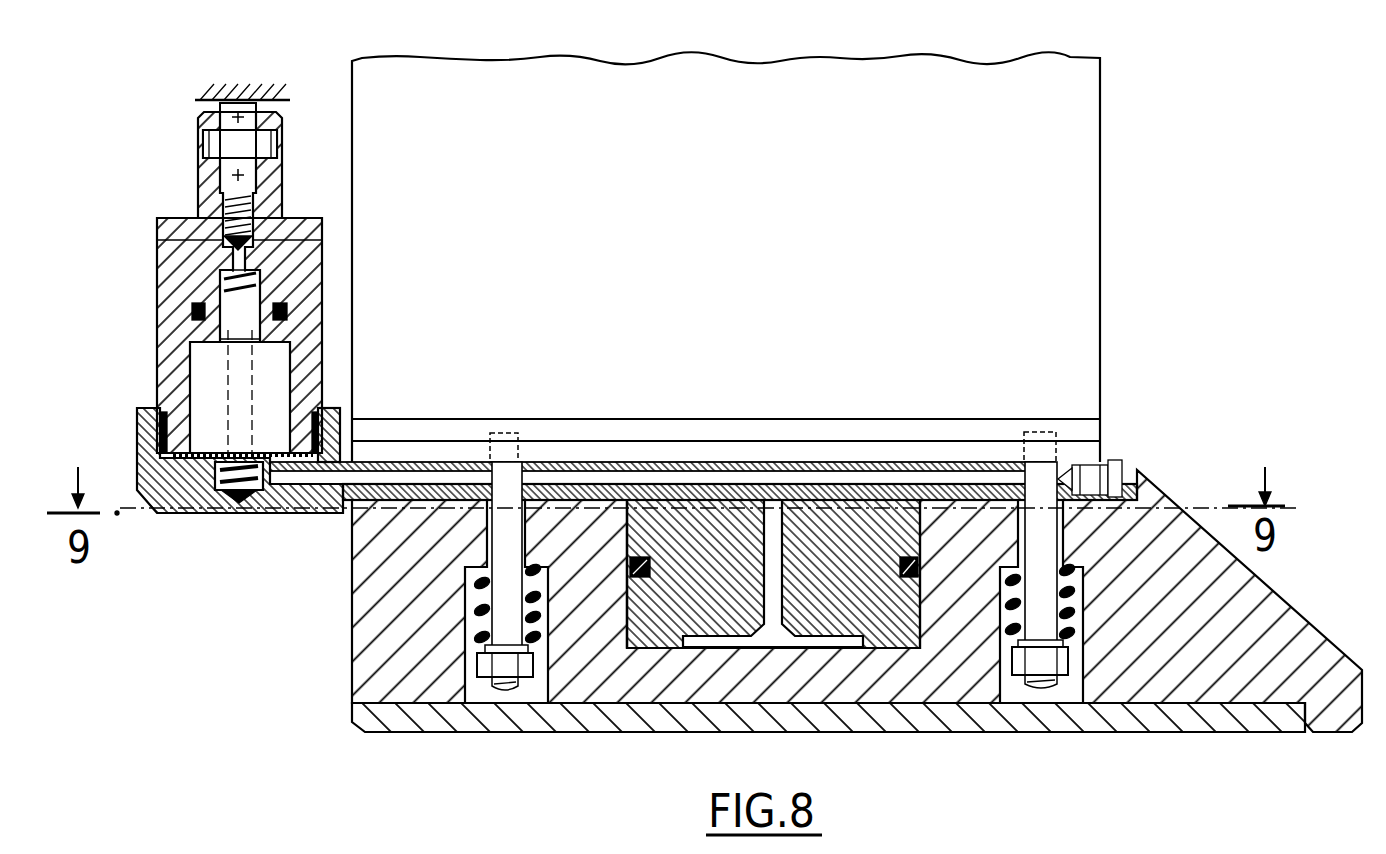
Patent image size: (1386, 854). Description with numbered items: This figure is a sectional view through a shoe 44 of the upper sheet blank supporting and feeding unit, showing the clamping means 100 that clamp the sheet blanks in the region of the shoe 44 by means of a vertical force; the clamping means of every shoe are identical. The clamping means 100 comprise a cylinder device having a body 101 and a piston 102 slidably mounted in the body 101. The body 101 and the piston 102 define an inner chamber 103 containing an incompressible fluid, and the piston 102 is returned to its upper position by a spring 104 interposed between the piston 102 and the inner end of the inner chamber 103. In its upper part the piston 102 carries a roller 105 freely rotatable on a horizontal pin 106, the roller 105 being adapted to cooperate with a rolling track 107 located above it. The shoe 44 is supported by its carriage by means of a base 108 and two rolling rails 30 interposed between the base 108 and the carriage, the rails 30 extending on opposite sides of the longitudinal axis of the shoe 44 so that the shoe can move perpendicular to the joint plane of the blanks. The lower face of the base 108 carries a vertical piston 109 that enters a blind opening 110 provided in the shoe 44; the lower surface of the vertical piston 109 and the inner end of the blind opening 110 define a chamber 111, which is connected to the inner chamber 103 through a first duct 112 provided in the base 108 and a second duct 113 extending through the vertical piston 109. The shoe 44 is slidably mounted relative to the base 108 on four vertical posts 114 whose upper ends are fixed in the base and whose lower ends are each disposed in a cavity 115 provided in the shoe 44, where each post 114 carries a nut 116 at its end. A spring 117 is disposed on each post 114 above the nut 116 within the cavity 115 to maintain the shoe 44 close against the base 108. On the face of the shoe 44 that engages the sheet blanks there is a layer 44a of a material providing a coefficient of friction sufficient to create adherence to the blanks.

The rolling rails 30 is at (1087, 425).
The shoe 44 is at (1080, 380).
The layer 44a is at (977, 730).
The clamping means 100 is at (240, 246).
The body 101 is at (308, 347).
The piston 102 is at (202, 183).
The inner chamber 103 is at (205, 383).
The spring 104 is at (205, 466).
The roller 105 is at (230, 100).
The horizontal pin 106 is at (217, 142).
The rolling track 107 is at (272, 87).
The base 108 is at (368, 507).
The vertical piston 109 is at (886, 620).
The blind opening 110 is at (613, 637).
The chamber 111 is at (717, 645).
The first duct 112 is at (678, 466).
The second duct 113 is at (773, 530).
The vertical posts 114 is at (500, 528).
The cavity 115 is at (475, 605).
The nut 116 is at (487, 667).
The spring 117 is at (470, 643).